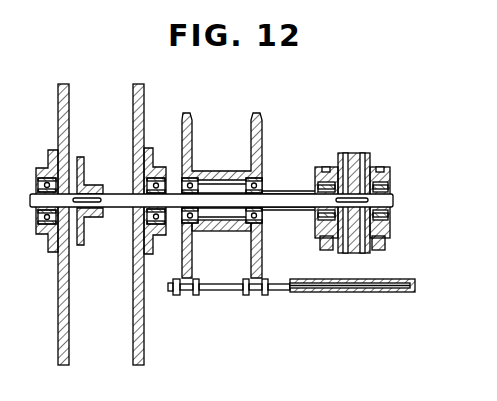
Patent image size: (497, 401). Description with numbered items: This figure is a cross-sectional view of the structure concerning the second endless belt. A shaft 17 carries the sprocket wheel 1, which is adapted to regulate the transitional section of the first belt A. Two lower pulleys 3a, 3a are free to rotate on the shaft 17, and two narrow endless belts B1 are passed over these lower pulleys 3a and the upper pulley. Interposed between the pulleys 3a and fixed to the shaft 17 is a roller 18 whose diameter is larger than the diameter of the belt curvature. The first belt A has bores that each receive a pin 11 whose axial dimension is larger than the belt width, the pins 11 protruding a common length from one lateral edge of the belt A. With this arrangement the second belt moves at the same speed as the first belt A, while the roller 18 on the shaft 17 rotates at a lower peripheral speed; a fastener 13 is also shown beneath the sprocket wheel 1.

The sprocket wheel 1 is at (262, 130).
The lower pulley 3a is at (316, 229).
The narrow endless belt B1 is at (321, 246).
The pin 11 is at (411, 293).
The bolt 13 is at (257, 293).
The shaft 17 is at (388, 200).
The roller 18 is at (349, 156).
The first belt A is at (354, 294).